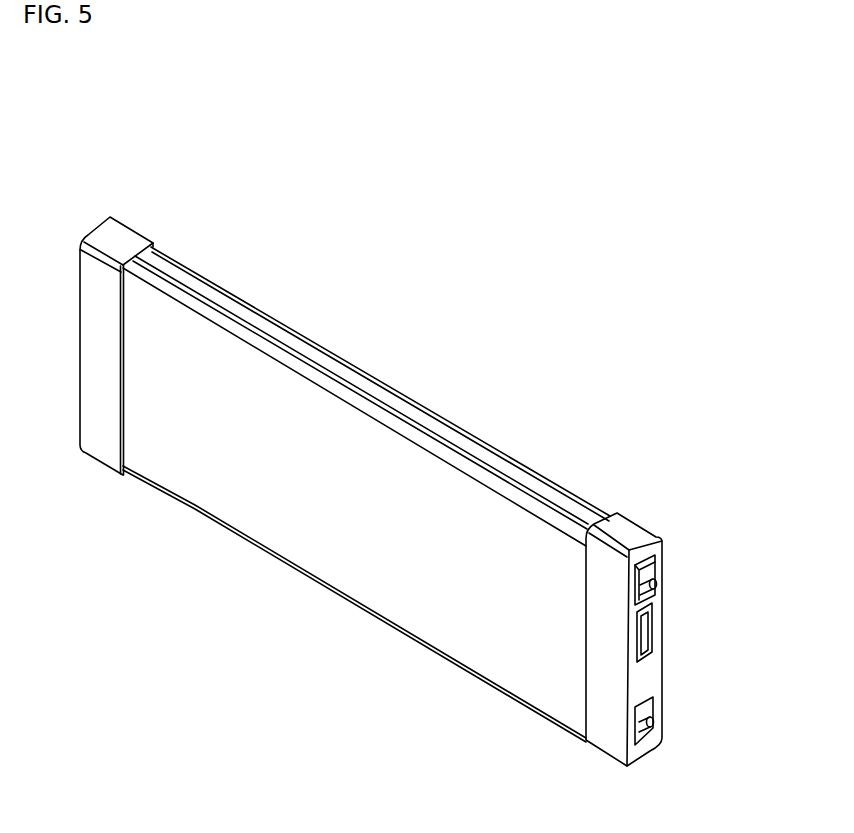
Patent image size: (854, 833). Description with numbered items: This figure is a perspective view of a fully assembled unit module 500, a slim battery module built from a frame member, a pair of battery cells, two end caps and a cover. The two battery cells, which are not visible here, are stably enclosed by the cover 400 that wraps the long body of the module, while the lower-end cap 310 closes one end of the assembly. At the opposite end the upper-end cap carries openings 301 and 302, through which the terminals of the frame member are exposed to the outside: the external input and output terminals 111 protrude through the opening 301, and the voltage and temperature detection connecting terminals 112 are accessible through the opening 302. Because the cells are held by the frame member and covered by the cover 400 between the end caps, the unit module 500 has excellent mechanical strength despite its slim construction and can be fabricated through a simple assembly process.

The unit module 500 is at (76, 105).
The cover 400 is at (362, 368).
The lower-end cap 310 is at (646, 644).
The opening 301 is at (729, 568).
The external input and output terminal 111 is at (660, 585).
The opening 302 is at (732, 665).
The voltage and temperature detection connecting terminal 112 is at (660, 655).